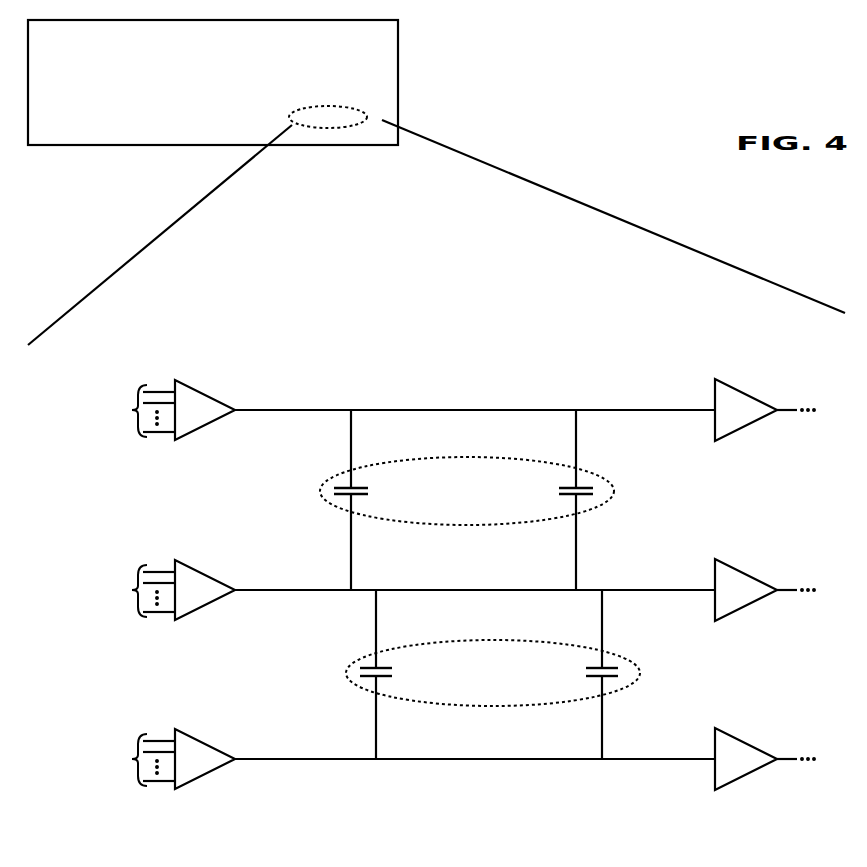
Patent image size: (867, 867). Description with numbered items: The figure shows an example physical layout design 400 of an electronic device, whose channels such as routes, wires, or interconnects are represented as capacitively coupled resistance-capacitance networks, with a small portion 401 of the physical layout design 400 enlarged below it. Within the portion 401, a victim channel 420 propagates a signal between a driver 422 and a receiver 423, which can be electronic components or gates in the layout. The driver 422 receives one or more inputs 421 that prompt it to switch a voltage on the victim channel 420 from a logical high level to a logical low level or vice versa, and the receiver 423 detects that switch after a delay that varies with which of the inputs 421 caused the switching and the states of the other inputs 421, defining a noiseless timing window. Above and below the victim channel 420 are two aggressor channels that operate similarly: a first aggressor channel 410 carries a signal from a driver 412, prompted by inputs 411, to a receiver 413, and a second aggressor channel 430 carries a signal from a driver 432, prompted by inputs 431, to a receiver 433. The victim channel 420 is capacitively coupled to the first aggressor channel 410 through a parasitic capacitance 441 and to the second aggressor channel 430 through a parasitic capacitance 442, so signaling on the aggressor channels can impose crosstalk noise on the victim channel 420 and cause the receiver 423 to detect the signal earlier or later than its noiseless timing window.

The physical layout design 400 is at (213, 82).
The portion 401 is at (362, 112).
The first aggressor channel 410 is at (475, 386).
The inputs 411 is at (108, 411).
The driver 412 is at (218, 400).
The receiver 413 is at (756, 399).
The victim channel 420 is at (475, 567).
The inputs 421 is at (108, 591).
The driver 422 is at (218, 580).
The receiver 423 is at (756, 579).
The second aggressor channel 430 is at (475, 786).
The inputs 431 is at (108, 760).
The driver 432 is at (218, 748).
The receiver 433 is at (756, 748).
The parasitic capacitance 441 is at (467, 500).
The parasitic capacitance 442 is at (493, 674).